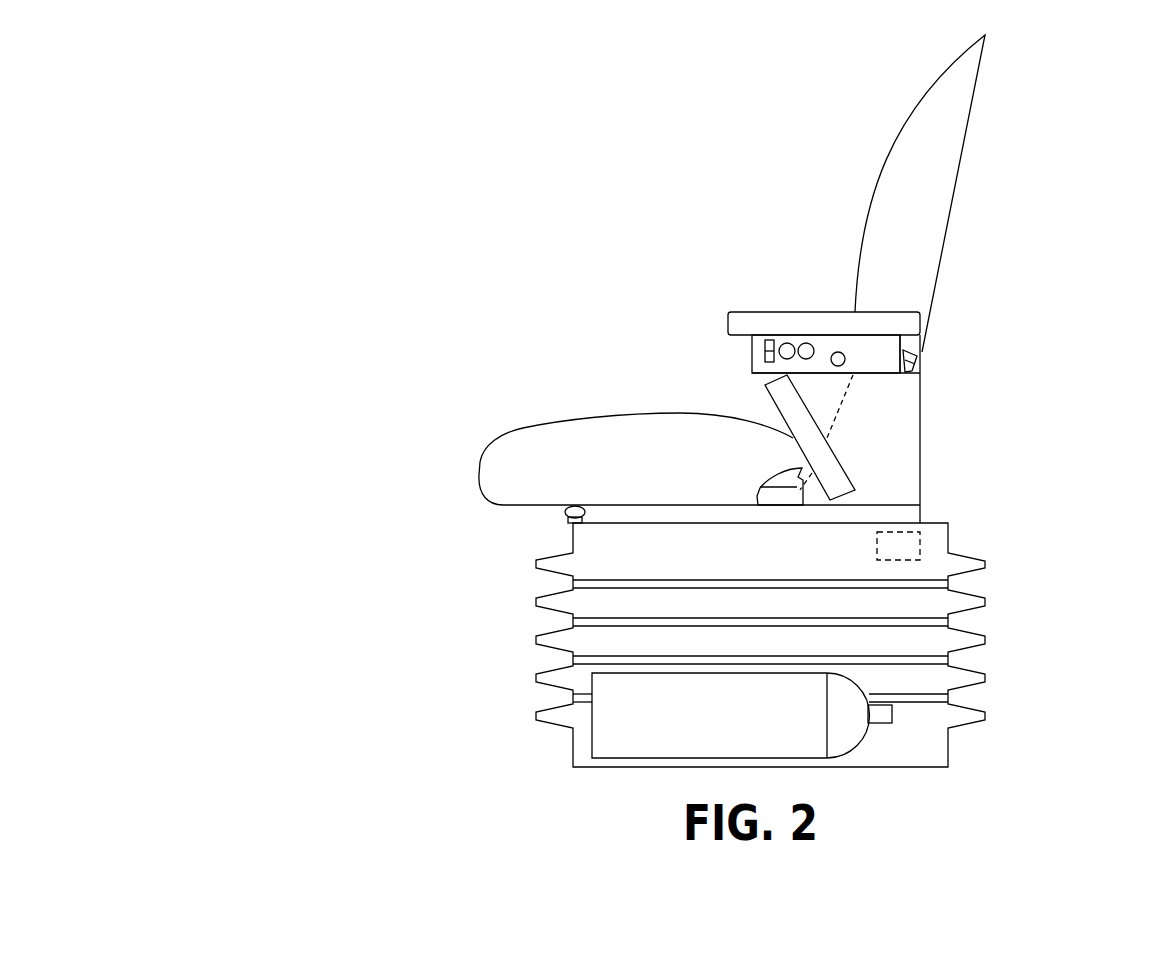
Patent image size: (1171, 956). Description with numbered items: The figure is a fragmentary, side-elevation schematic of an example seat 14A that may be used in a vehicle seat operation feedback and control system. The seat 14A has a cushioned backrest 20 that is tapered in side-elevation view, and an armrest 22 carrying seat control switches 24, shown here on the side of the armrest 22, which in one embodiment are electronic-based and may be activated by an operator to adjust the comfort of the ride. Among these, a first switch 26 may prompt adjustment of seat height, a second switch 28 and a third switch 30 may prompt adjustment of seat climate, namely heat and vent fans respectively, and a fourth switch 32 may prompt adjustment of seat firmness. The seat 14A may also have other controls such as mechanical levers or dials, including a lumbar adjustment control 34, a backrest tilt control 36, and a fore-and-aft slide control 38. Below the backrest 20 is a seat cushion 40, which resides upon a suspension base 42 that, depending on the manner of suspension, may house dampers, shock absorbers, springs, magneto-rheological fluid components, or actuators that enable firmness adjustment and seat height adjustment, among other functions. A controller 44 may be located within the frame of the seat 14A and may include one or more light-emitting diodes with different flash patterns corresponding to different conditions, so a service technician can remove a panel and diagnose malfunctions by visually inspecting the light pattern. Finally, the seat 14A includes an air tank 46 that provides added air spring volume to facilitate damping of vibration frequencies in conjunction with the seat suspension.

The seat 14A is at (592, 148).
The cushioned backrest 20 is at (963, 155).
The armrest 22 is at (727, 325).
The seat control switches 24 is at (862, 345).
The first switch 26 is at (752, 353).
The second switch 28 is at (783, 343).
The third switch 30 is at (808, 343).
The fourth switch 32 is at (845, 366).
The lumbar adjustment control 34 is at (917, 354).
The backrest tilt control 36 is at (755, 490).
The fore-and-aft slide control 38 is at (567, 517).
The seat cushion 40 is at (490, 452).
The suspension base 42 is at (958, 557).
The controller 44 is at (920, 548).
The air tank 46 is at (742, 715).